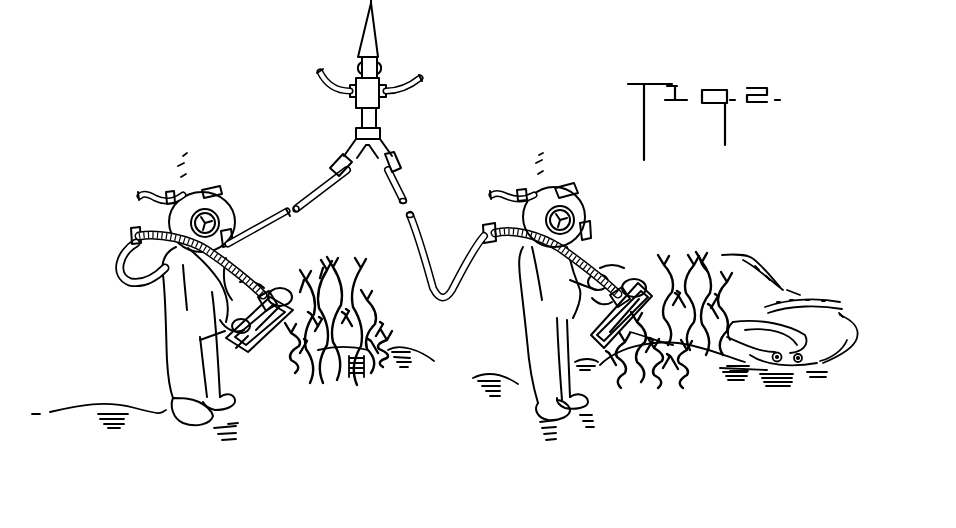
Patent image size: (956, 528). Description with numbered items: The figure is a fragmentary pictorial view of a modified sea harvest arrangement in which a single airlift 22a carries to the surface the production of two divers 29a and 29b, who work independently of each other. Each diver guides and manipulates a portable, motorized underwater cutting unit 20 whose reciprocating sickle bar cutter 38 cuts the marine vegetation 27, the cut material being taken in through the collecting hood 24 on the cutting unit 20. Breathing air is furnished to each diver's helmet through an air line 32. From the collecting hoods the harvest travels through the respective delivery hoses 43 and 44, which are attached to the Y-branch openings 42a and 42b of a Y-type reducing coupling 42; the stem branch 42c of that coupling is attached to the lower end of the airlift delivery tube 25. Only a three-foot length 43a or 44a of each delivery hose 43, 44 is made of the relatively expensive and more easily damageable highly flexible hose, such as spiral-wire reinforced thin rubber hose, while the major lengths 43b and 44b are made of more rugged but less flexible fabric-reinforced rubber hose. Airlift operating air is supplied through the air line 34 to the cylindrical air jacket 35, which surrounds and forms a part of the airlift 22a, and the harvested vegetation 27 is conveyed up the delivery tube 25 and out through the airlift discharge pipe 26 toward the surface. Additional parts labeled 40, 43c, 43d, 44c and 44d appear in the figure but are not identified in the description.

The underwater cutting unit 20 is at (302, 284).
The airlift 22a is at (368, 100).
The collecting hood 24 is at (201, 338).
The airlift delivery tube 25 is at (376, 115).
The airlift discharge pipe 26 is at (369, 43).
The marine vegetation 27 is at (733, 306).
The diver 29a is at (516, 342).
The diver 29b is at (168, 340).
The air line 32 is at (147, 193).
The air line 34 is at (327, 83).
The cylindrical air jacket 35 is at (383, 73).
The reciprocating sickle bar cutter 38 is at (463, 301).
The spike tip 40 is at (368, 10).
The Y-type reducing coupling 42 is at (368, 164).
The Y-branch opening 42a is at (345, 160).
The Y-branch opening 42b is at (393, 160).
The stem branch 42c is at (381, 145).
The delivery hose 43 is at (427, 219).
The highly flexible hose length 43a is at (584, 258).
The major hose length 43b is at (422, 245).
The nozzle tool 43c is at (620, 268).
The hose stub 43d is at (391, 178).
The delivery hose 44 is at (306, 185).
The highly flexible hose length 44a is at (238, 273).
The major hose length 44b is at (304, 209).
The nozzle tool 44c is at (254, 288).
The hose stub 44d is at (338, 167).